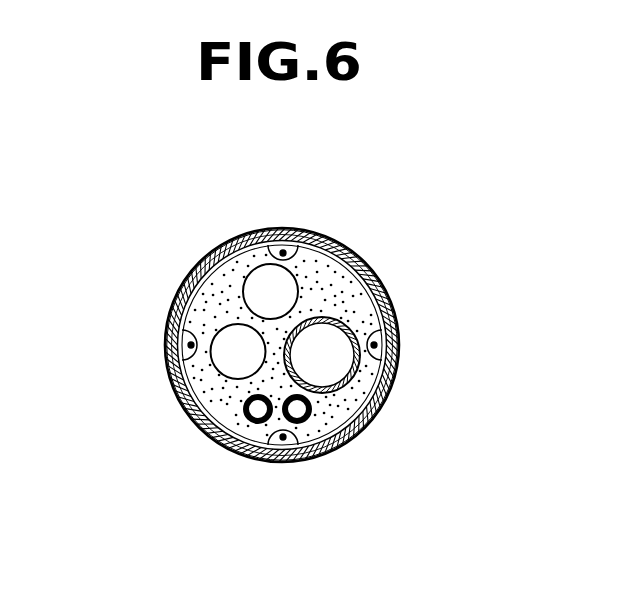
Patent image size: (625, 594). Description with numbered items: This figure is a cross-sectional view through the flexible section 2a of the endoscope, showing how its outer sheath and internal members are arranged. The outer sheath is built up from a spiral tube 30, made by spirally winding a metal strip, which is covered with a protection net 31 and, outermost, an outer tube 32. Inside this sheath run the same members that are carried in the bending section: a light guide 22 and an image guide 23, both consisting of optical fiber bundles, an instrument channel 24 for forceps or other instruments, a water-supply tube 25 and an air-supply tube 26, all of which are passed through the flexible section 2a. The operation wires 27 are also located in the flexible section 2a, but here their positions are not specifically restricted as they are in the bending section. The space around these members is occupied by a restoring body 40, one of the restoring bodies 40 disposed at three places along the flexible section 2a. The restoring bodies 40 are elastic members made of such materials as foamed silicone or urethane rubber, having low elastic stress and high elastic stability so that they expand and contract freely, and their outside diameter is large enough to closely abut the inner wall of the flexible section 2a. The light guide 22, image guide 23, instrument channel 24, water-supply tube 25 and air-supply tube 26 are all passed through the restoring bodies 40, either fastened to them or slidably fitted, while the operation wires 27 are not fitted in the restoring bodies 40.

The flexible section 2a is at (216, 236).
The light guide 22 is at (262, 291).
The image guide 23 is at (230, 368).
The instrument channel 24 is at (350, 320).
The water-supply tube 25 is at (249, 425).
The air-supply tube 26 is at (315, 417).
The operation wires 27 is at (283, 250).
The spiral tube 30 is at (212, 447).
The protection net 31 is at (176, 314).
The outer tube 32 is at (338, 238).
The restoring bodies 40 is at (385, 400).